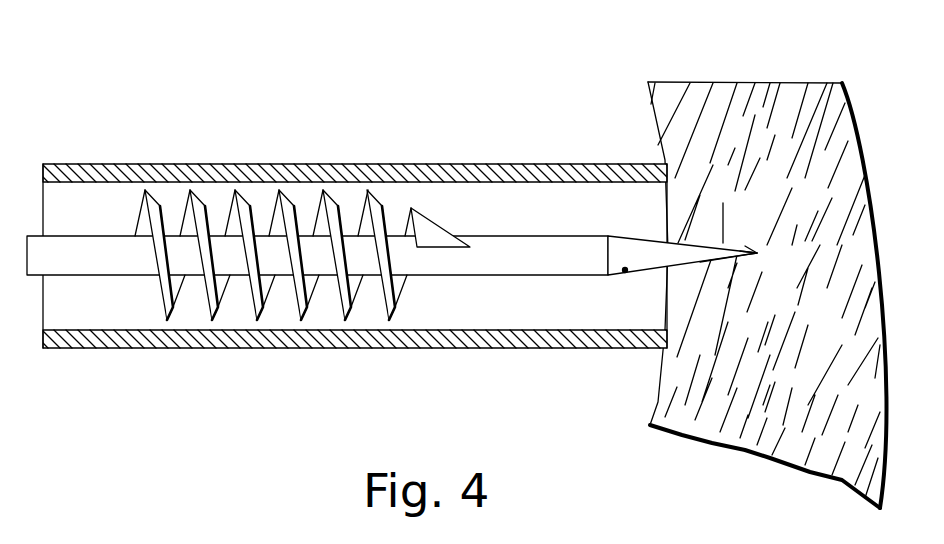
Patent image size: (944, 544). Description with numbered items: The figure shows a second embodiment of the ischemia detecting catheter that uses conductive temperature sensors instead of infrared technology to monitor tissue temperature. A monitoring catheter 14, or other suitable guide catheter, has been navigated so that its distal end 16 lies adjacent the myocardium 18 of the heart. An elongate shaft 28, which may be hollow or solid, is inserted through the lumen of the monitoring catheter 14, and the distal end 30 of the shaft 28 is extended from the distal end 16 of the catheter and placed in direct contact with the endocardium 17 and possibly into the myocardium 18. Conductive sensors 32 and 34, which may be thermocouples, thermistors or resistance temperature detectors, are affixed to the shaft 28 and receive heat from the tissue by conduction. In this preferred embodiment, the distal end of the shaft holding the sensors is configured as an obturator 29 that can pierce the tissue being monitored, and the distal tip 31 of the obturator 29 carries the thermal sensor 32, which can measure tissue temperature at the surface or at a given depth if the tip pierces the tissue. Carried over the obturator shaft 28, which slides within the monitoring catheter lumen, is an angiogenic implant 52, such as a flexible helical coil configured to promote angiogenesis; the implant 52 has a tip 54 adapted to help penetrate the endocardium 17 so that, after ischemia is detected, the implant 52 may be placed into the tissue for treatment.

The monitoring catheter 14 is at (490, 144).
The distal end of the monitoring catheter 16 is at (668, 178).
The endocardium 17 is at (658, 401).
The myocardium 18 is at (788, 85).
The elongate shaft 28 is at (490, 265).
The obturator 29 is at (708, 258).
The distal end of the shaft 30 is at (596, 242).
The distal tip of the obturator 31 is at (755, 232).
The thermal sensor 32 is at (757, 253).
The conductive sensor 34 is at (625, 270).
The angiogenic implant 52 is at (250, 297).
The tip of the implant 54 is at (443, 238).